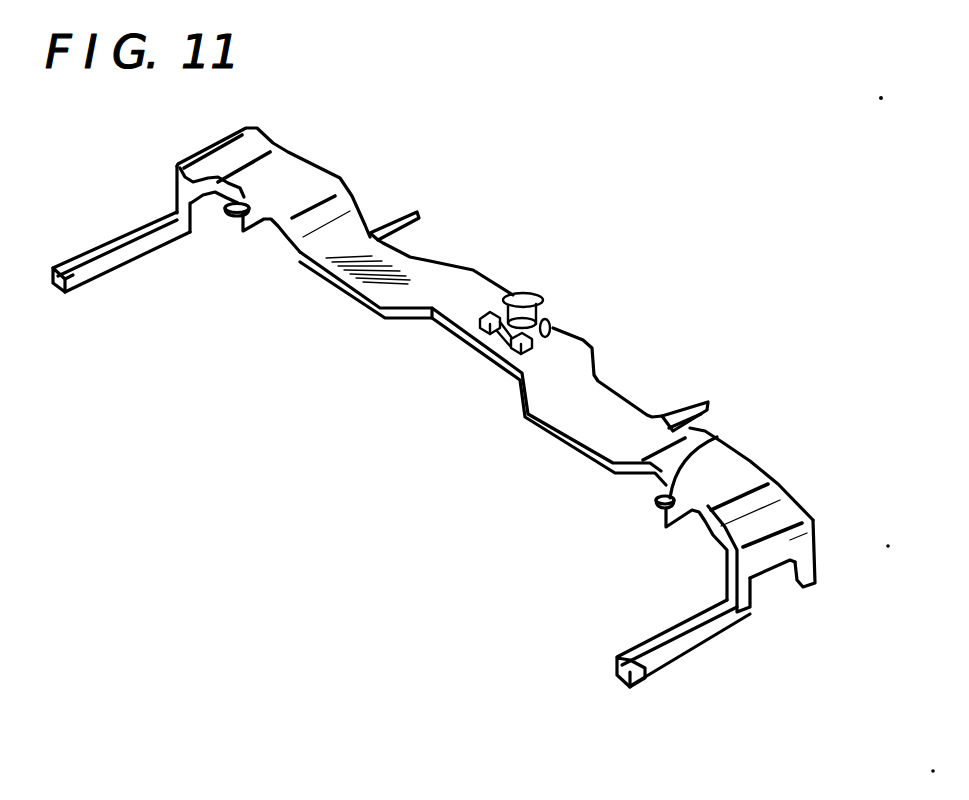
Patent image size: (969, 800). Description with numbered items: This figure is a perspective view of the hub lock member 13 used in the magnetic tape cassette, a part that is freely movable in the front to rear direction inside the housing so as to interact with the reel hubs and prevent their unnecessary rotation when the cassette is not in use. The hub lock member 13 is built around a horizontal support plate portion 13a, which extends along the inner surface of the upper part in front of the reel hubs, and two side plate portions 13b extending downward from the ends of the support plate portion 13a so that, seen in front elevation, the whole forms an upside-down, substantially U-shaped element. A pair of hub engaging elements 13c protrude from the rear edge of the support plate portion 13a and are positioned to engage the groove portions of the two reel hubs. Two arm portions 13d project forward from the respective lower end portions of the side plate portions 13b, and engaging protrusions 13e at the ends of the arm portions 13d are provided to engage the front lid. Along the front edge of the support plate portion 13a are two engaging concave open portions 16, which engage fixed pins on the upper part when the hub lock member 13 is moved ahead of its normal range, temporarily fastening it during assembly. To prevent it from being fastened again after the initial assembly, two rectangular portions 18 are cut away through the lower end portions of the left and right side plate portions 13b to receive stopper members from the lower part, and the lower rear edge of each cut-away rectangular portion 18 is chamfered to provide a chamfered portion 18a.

The hub lock member 13 is at (364, 481).
The horizontal support plate portion 13a is at (475, 283).
The side plate portions 13b is at (173, 188).
The hub engaging elements 13c is at (400, 214).
The arm portions 13d is at (120, 243).
The engaging protrusions 13e is at (47, 282).
The engaging open portions 16 is at (250, 198).
The cut-away rectangular portions 18 is at (197, 213).
The chamfered portion 18a is at (795, 582).